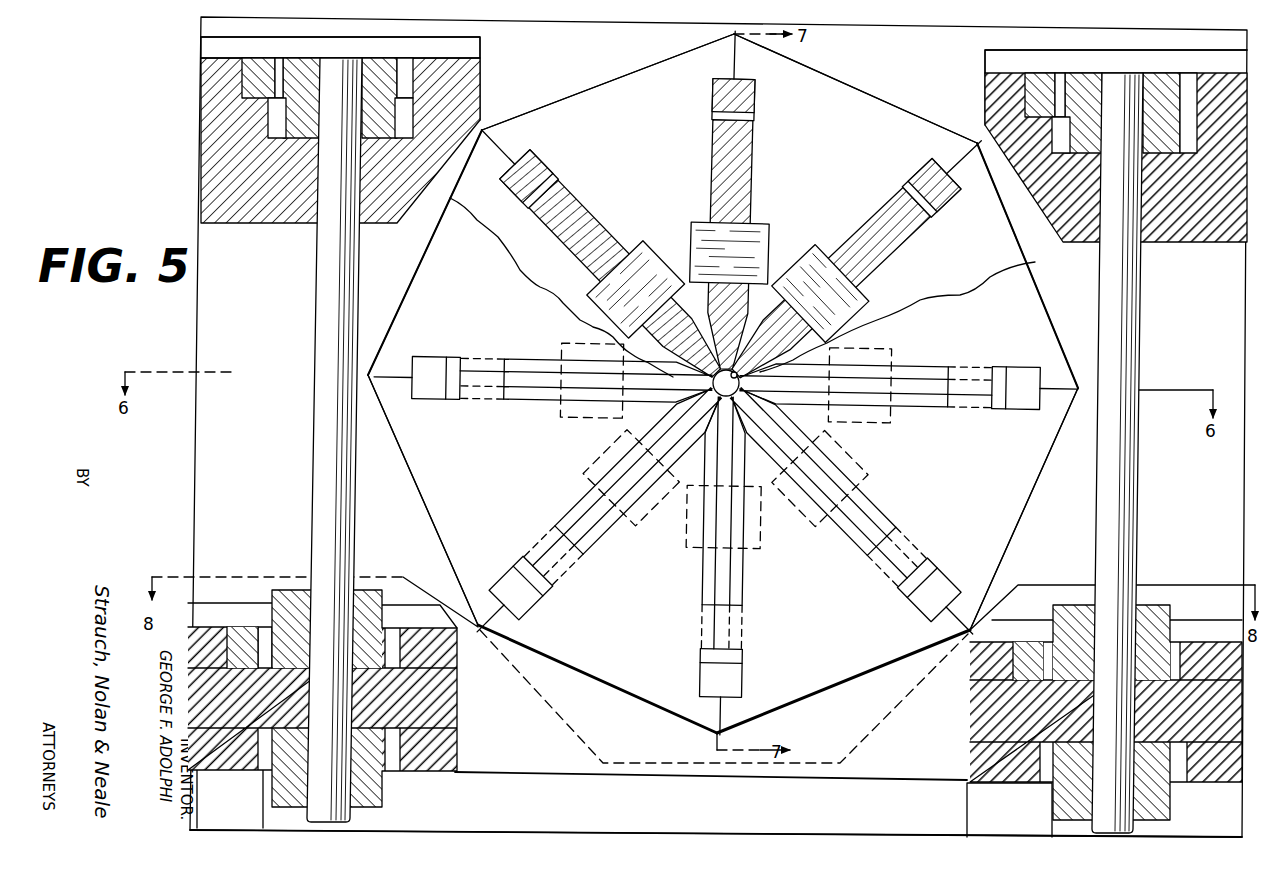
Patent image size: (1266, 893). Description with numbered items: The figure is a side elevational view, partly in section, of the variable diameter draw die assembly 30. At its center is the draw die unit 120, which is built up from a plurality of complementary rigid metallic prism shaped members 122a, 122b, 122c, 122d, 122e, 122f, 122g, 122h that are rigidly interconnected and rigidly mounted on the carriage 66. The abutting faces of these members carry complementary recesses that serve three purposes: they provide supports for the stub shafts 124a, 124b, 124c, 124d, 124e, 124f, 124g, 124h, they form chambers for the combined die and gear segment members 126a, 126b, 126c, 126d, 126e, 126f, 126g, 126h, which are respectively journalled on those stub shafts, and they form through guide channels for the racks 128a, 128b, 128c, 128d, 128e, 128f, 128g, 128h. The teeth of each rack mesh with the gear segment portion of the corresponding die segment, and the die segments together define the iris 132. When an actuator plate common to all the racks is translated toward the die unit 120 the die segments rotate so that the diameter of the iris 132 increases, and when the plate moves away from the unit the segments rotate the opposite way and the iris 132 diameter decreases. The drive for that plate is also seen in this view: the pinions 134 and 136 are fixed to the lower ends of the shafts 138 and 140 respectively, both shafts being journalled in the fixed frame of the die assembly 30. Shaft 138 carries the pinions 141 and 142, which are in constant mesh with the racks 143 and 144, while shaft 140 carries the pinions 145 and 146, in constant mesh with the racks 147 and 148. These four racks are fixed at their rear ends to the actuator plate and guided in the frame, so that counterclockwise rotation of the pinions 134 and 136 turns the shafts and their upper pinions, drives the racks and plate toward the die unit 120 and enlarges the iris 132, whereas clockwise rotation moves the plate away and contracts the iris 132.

The draw die assembly 30 is at (188, 128).
The carriage 66 is at (920, 778).
The draw die unit 120 is at (596, 78).
The prism shaped member 122a is at (568, 104).
The prism shaped member 122b is at (876, 106).
The prism shaped member 122c is at (975, 279).
The prism shaped member 122d is at (1035, 470).
The prism shaped member 122e is at (826, 686).
The prism shaped member 122f is at (610, 694).
The prism shaped member 122g is at (420, 470).
The prism shaped member 122h is at (430, 253).
The stub shaft 124a is at (628, 252).
The stub shaft 124b is at (762, 222).
The stub shaft 124c is at (820, 250).
The stub shaft 124d is at (888, 346).
The stub shaft 124e is at (852, 458).
The stub shaft 124f is at (758, 545).
The stub shaft 124g is at (582, 462).
The stub shaft 124h is at (560, 410).
The combined die and gear segment member 126a is at (585, 212).
The combined die and gear segment member 126b is at (752, 170).
The combined die and gear segment member 126c is at (895, 258).
The combined die and gear segment member 126d is at (946, 366).
The combined die and gear segment member 126e is at (870, 500).
The combined die and gear segment member 126f is at (744, 580).
The combined die and gear segment member 126g is at (570, 506).
The combined die and gear segment member 126h is at (553, 360).
The rack 128a is at (512, 161).
The rack 128b is at (754, 98).
The rack 128c is at (928, 172).
The rack 128d is at (1005, 367).
The rack 128e is at (936, 574).
The rack 128f is at (744, 662).
The rack 128g is at (525, 605).
The rack 128h is at (426, 360).
The iris 132 is at (737, 372).
The pinion 134 is at (376, 788).
The pinion 136 is at (1056, 802).
The shaft 138 is at (319, 518).
The shaft 140 is at (1100, 522).
The pinion 141 is at (403, 588).
The pinion 142 is at (375, 66).
The rack 143 is at (246, 628).
The rack 144 is at (260, 62).
The pinion 145 is at (1163, 608).
The pinion 146 is at (1165, 82).
The rack 147 is at (1038, 642).
The rack 148 is at (1038, 82).